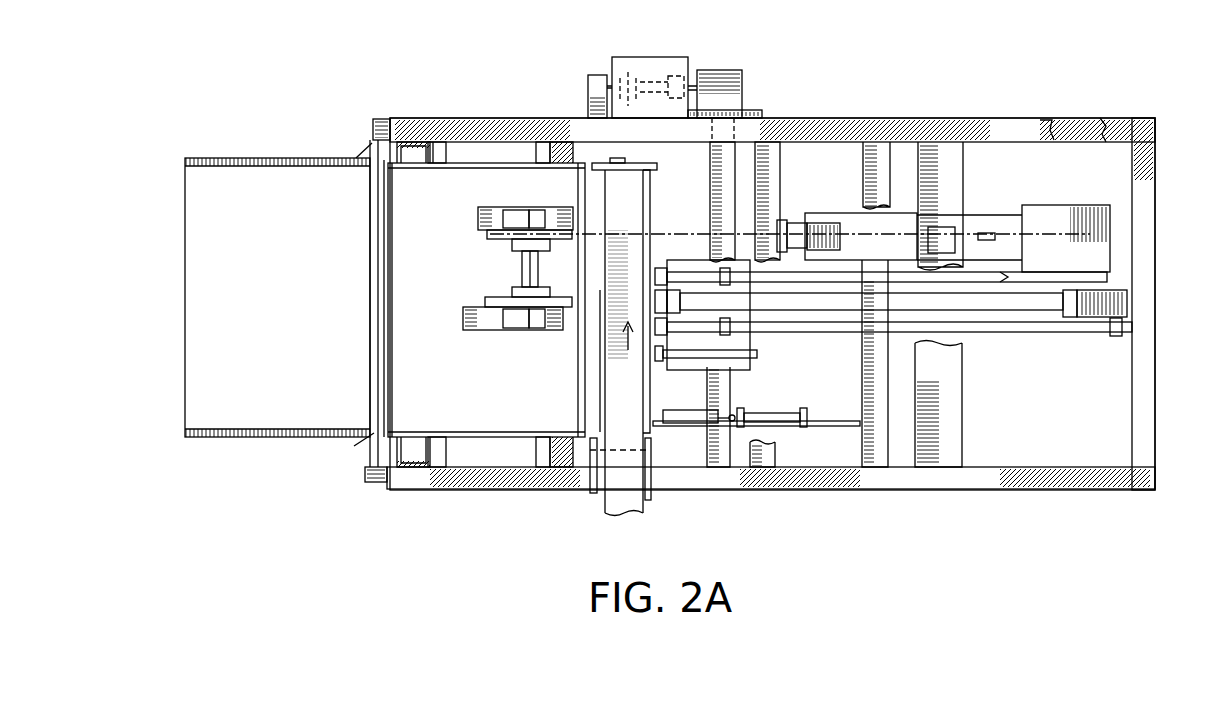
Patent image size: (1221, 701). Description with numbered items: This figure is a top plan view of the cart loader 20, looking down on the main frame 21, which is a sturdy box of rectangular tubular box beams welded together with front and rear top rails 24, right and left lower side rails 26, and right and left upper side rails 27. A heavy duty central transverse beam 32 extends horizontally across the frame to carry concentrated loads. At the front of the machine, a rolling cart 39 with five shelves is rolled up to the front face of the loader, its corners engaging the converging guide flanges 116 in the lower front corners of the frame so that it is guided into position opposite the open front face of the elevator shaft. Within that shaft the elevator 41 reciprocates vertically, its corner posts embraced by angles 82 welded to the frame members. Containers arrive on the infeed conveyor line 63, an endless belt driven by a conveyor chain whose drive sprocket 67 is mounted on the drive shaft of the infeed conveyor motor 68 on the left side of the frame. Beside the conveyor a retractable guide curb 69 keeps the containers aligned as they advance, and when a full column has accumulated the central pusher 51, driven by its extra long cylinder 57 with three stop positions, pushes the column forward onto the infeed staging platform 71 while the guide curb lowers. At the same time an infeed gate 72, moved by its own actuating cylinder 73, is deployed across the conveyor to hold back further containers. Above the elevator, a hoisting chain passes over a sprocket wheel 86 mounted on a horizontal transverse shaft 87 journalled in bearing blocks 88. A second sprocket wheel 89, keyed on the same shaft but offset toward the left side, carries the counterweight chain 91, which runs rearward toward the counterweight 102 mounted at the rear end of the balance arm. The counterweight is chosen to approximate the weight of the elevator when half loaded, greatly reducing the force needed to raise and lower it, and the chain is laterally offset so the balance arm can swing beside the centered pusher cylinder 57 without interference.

The cart loader 20 is at (828, 114).
The main frame 21 is at (386, 112).
The front and rear top rails 24 is at (1148, 392).
The right and left lower side rails 26 is at (1080, 128).
The right and left upper side rails 27 is at (508, 120).
The central transverse beam 32 is at (780, 186).
The rolling cart 39 is at (260, 148).
The elevator 41 is at (498, 152).
The central pusher 51 is at (648, 190).
The extra long cylinder 57 is at (800, 304).
The infeed conveyor line 63 is at (604, 500).
The drive sprocket 67 is at (628, 58).
The infeed conveyor motor 68 is at (726, 76).
The retractable guide curb 69 is at (602, 212).
The infeed staging platform 71 is at (596, 386).
The infeed gate 72 is at (654, 424).
The actuating cylinder 73 is at (764, 412).
The angles 82 is at (408, 140).
The sprocket wheel 86 is at (488, 300).
The horizontal transverse shaft 87 is at (522, 264).
The bearing blocks 88 is at (526, 218).
The second sprocket wheel 89 is at (490, 232).
The counterweight chain 91 is at (854, 232).
The counterweight 102 is at (1070, 254).
The converging guide flange 116 is at (366, 156).